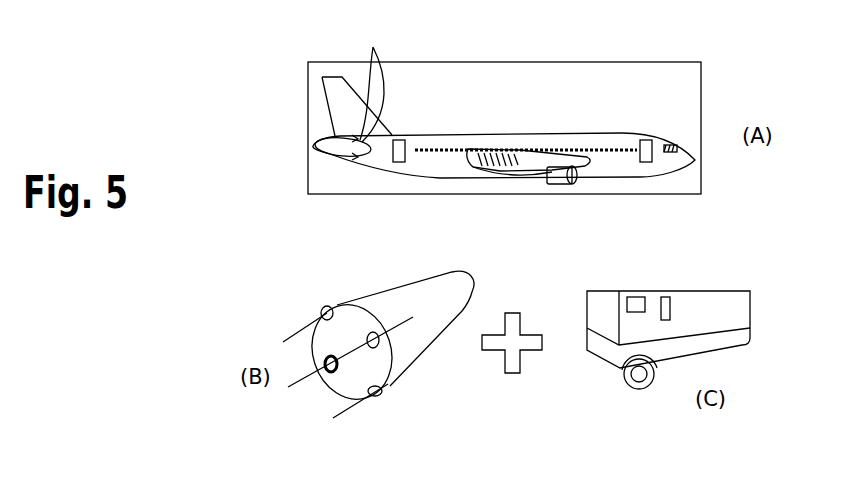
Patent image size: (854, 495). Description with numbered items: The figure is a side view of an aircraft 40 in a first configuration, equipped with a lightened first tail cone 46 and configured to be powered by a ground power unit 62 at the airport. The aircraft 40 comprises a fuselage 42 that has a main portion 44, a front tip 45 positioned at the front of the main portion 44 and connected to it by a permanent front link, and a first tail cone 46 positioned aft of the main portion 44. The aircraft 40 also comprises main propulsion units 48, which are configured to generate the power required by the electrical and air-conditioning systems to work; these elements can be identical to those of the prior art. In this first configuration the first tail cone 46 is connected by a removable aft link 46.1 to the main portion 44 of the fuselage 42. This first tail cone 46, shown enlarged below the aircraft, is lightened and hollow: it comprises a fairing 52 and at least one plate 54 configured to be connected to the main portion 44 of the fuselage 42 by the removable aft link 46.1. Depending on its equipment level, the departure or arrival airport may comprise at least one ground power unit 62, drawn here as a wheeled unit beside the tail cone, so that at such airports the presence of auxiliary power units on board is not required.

The aircraft 40 is at (474, 127).
The fuselage 42 is at (540, 133).
The main portion 44 is at (661, 191).
The front tip 45 is at (694, 158).
The first tail cone 46 is at (337, 160).
The removable aft link 46.1 is at (373, 447).
The main propulsion units 48 is at (568, 192).
The fairing 52 is at (417, 282).
The plate 54 is at (322, 309).
The ground power unit 62 is at (703, 308).